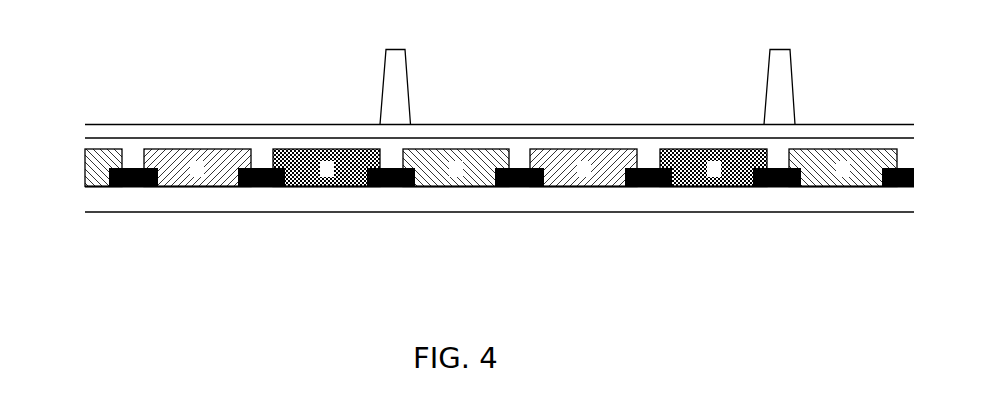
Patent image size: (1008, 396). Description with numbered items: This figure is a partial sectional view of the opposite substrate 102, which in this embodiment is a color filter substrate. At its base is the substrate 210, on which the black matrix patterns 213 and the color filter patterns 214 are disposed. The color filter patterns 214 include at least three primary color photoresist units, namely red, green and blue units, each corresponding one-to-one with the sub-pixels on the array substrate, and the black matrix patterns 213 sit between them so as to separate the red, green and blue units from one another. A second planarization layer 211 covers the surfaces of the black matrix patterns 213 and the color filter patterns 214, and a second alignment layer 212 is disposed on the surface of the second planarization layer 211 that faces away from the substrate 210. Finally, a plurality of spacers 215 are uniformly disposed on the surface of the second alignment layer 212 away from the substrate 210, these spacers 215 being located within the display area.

The opposite substrate 102 is at (53, 70).
The substrate 210 is at (100, 198).
The second planarization layer 211 is at (100, 146).
The second alignment layer 212 is at (100, 132).
The black matrix patterns 213 is at (131, 188).
The color filter patterns 214 is at (433, 173).
The spacers 215 is at (395, 100).